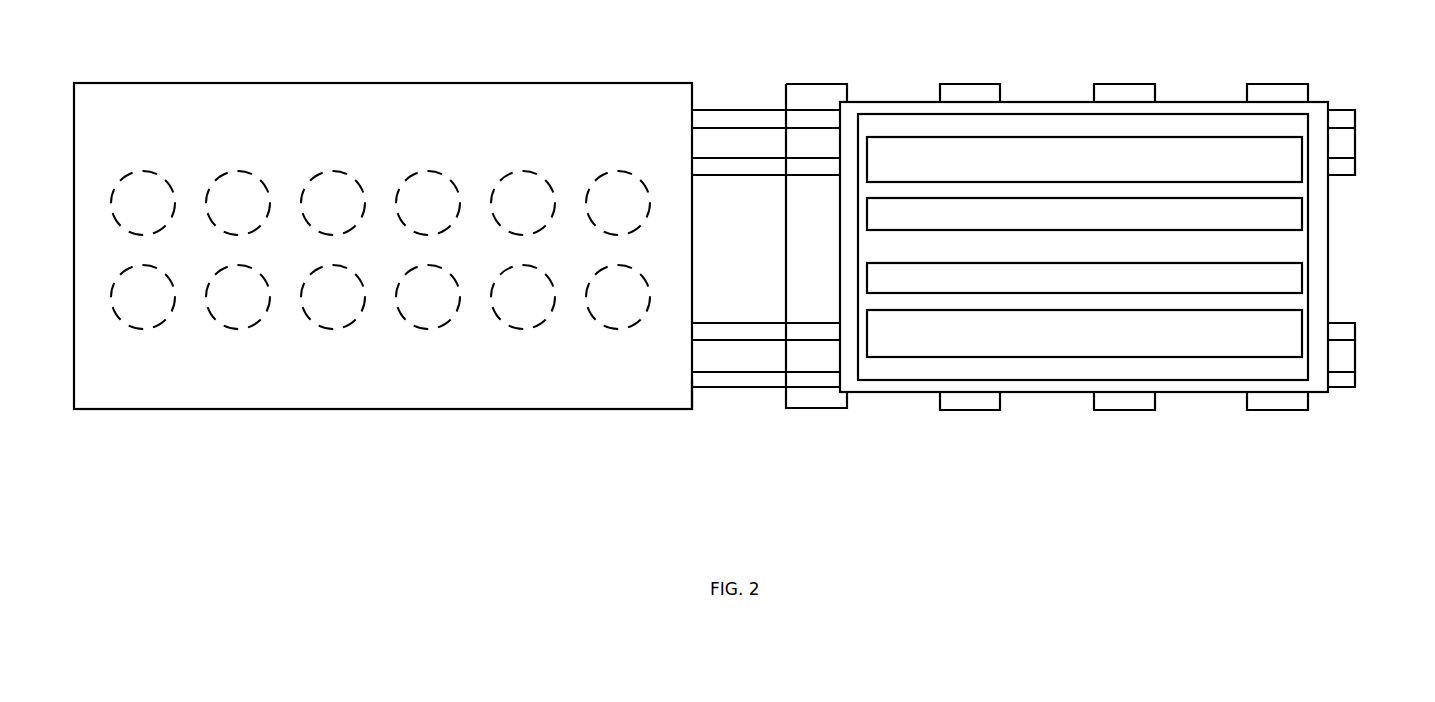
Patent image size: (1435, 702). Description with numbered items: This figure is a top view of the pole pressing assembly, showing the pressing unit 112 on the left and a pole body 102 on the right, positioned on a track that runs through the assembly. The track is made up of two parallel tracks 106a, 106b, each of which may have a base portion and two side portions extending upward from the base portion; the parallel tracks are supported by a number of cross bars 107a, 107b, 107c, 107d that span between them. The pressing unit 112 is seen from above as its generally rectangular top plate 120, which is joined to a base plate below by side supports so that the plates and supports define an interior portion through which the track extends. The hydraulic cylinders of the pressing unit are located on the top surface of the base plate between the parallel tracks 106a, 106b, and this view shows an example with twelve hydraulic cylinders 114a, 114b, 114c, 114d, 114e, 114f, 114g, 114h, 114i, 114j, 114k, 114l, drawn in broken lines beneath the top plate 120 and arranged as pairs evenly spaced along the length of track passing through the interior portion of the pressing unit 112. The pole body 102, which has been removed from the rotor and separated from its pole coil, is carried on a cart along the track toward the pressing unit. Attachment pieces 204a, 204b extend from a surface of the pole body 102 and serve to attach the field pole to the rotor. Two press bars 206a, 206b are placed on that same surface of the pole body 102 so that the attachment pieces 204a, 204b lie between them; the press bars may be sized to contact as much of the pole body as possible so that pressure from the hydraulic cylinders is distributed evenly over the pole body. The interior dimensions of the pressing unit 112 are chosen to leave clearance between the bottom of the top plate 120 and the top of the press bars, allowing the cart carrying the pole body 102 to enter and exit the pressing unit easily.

The pole body 102 is at (1038, 99).
The parallel track 106a is at (756, 107).
The parallel track 106b is at (746, 320).
The cross bar 107a is at (816, 414).
The cross bar 107b is at (966, 414).
The cross bar 107c is at (1123, 414).
The cross bar 107d is at (1278, 414).
The pressing unit 112 is at (539, 81).
The hydraulic cylinder 114a is at (134, 169).
The hydraulic cylinder 114b is at (156, 330).
The hydraulic cylinder 114c is at (229, 169).
The hydraulic cylinder 114d is at (251, 330).
The hydraulic cylinder 114e is at (324, 169).
The hydraulic cylinder 114f is at (346, 330).
The hydraulic cylinder 114g is at (419, 169).
The hydraulic cylinder 114h is at (441, 330).
The hydraulic cylinder 114i is at (514, 169).
The hydraulic cylinder 114j is at (536, 330).
The hydraulic cylinder 114k is at (609, 169).
The hydraulic cylinder 114l is at (631, 330).
The top plate 120 is at (666, 387).
The attachment piece 204a is at (1306, 218).
The attachment piece 204b is at (1306, 282).
The press bar 206a is at (1306, 160).
The press bar 206b is at (1306, 345).